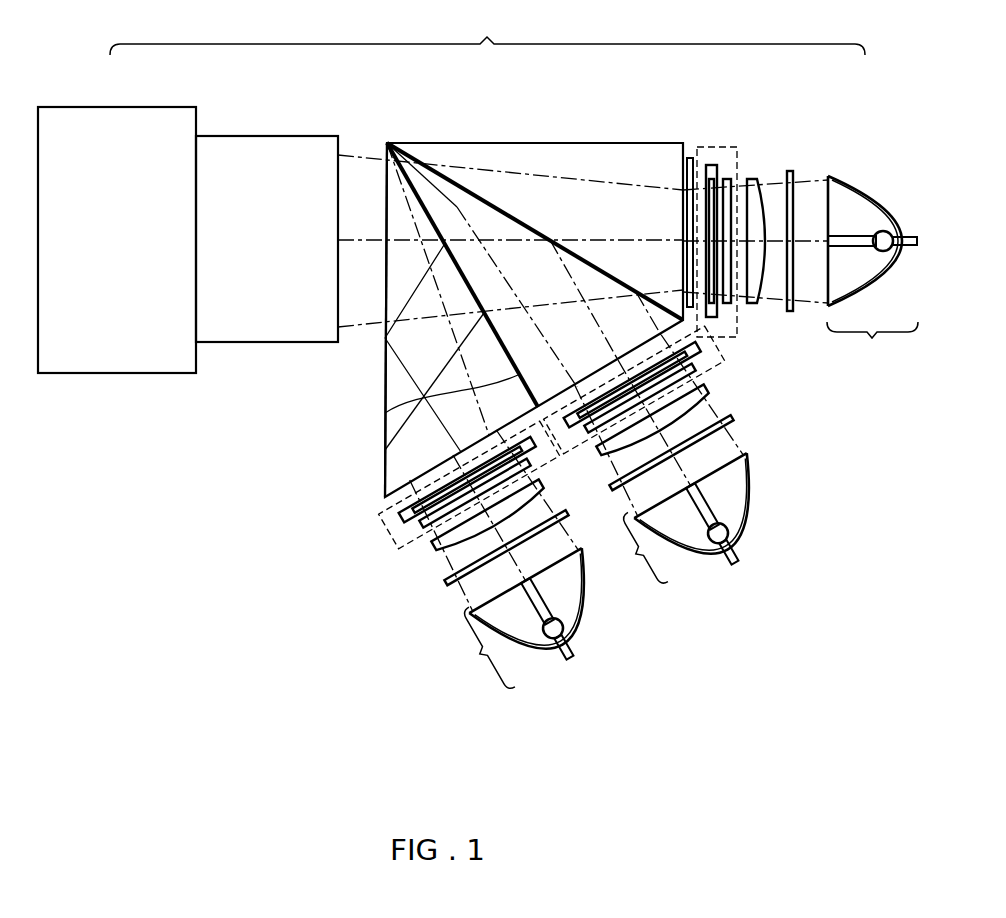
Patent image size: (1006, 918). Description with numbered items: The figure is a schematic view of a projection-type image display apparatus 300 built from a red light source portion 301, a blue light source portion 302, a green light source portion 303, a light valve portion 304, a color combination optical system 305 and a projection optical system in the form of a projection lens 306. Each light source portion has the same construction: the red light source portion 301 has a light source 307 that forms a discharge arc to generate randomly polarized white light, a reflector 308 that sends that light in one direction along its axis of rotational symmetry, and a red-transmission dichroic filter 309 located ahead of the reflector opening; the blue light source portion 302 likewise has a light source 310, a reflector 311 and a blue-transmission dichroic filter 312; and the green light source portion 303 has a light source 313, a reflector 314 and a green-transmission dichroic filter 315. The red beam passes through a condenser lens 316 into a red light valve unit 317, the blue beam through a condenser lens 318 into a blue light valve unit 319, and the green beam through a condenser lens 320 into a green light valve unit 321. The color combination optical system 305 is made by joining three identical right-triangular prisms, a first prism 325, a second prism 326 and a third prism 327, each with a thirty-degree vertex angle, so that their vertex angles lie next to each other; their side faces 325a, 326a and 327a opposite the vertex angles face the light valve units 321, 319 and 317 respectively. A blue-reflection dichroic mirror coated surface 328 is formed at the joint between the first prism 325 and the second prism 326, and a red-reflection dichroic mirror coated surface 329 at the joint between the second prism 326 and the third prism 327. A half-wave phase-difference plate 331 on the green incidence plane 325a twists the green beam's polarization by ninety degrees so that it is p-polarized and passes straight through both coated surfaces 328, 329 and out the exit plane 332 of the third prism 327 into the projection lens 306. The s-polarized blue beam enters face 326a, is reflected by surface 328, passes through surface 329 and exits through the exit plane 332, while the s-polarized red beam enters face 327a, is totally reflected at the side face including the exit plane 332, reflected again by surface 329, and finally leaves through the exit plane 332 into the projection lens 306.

The projection-type image display apparatus 300 is at (487, 33).
The projection optical system (projection lens) 306 is at (300, 136).
The color combination optical system 305 is at (536, 133).
The exit plane 332 is at (383, 188).
The blue-reflection dichroic mirror coated surface (first dichroic mirror surface) 328 is at (447, 172).
The second prism 326 is at (460, 205).
The first prism 325 is at (480, 165).
The red-reflection dichroic mirror coated surface (second dichroic mirror surface) 329 is at (385, 416).
The third prism 327 is at (392, 435).
The λ/2 phase-difference plate 331 is at (690, 318).
The side face (first incidence plane) 325a is at (700, 147).
The side face (second incidence plane) 326a is at (546, 418).
The side face (third incidence plane) 327a is at (382, 505).
The light valve portion 304 is at (712, 165).
The blue light valve unit 319 is at (700, 348).
The red light valve unit 317 is at (400, 521).
The green light valve unit 321 is at (727, 179).
The condenser lens 320 is at (757, 180).
The condenser lens 318 is at (710, 394).
The condenser lens 316 is at (437, 548).
The green-transmission dichroic filter 315 is at (791, 173).
The blue-transmission dichroic filter 312 is at (734, 420).
The red-transmission dichroic filter 309 is at (447, 584).
The light source 313 is at (881, 231).
The light source 310 is at (748, 513).
The reflector 308 is at (580, 640).
The reflector 314 is at (892, 228).
The reflector 311 is at (735, 548).
The light source 307 is at (548, 648).
The green light source portion 303 is at (872, 347).
The blue light source portion 302 is at (631, 550).
The red light source portion 301 is at (471, 650).